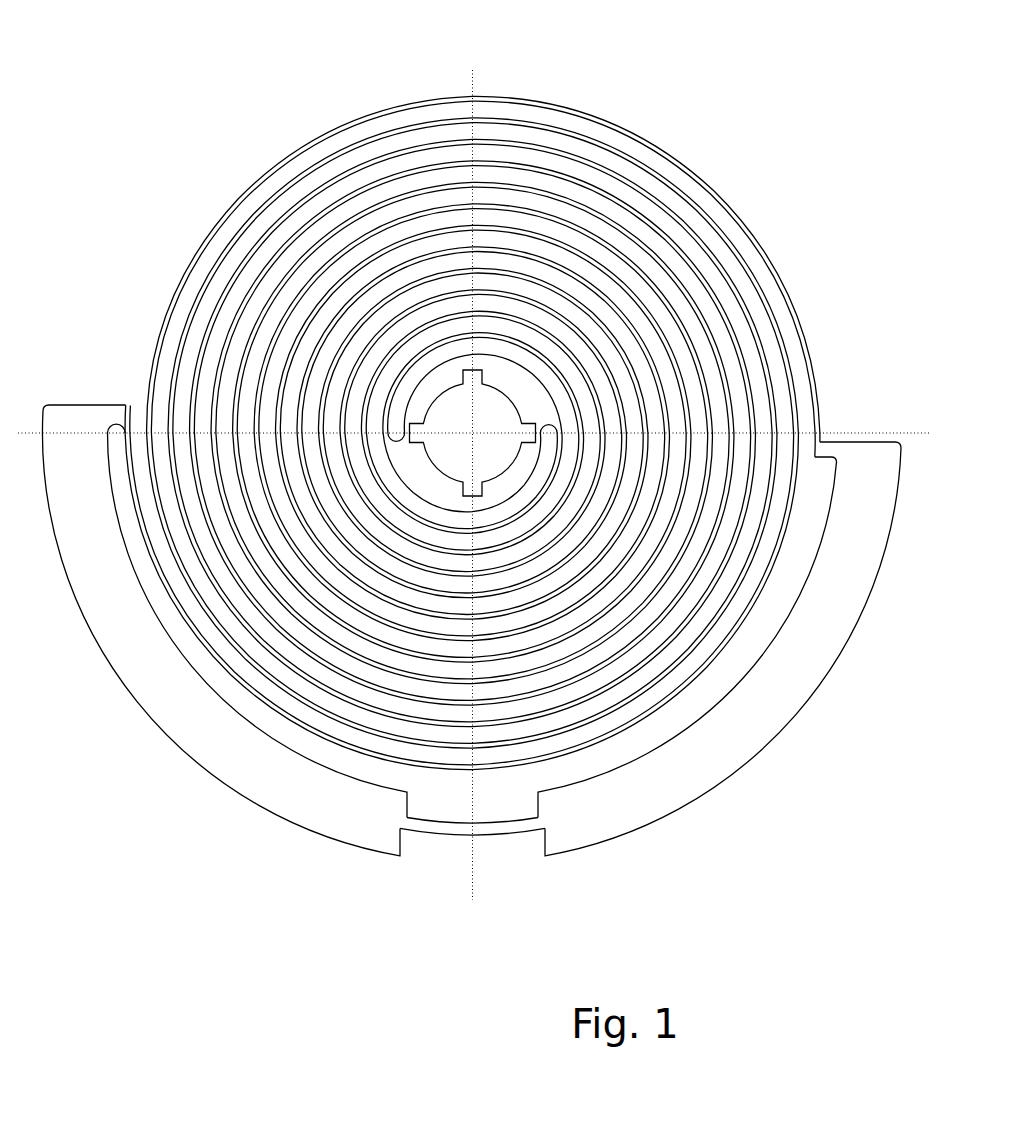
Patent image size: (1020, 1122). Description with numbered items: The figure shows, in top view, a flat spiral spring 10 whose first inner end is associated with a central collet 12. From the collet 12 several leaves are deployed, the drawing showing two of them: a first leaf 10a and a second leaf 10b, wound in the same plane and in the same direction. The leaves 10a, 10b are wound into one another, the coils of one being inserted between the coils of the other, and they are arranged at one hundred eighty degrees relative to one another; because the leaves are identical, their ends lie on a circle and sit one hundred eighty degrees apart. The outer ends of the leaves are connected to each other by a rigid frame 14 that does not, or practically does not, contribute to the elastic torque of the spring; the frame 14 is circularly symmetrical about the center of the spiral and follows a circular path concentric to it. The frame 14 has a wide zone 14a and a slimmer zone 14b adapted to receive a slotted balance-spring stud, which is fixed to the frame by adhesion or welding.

The flat spiral spring 10 is at (745, 155).
The first leaf 10a is at (395, 385).
The second leaf 10b is at (367, 450).
The collet 12 is at (435, 375).
The rigid frame 14 is at (232, 853).
The wide zone 14a is at (215, 740).
The slimmer zone 14b is at (455, 830).